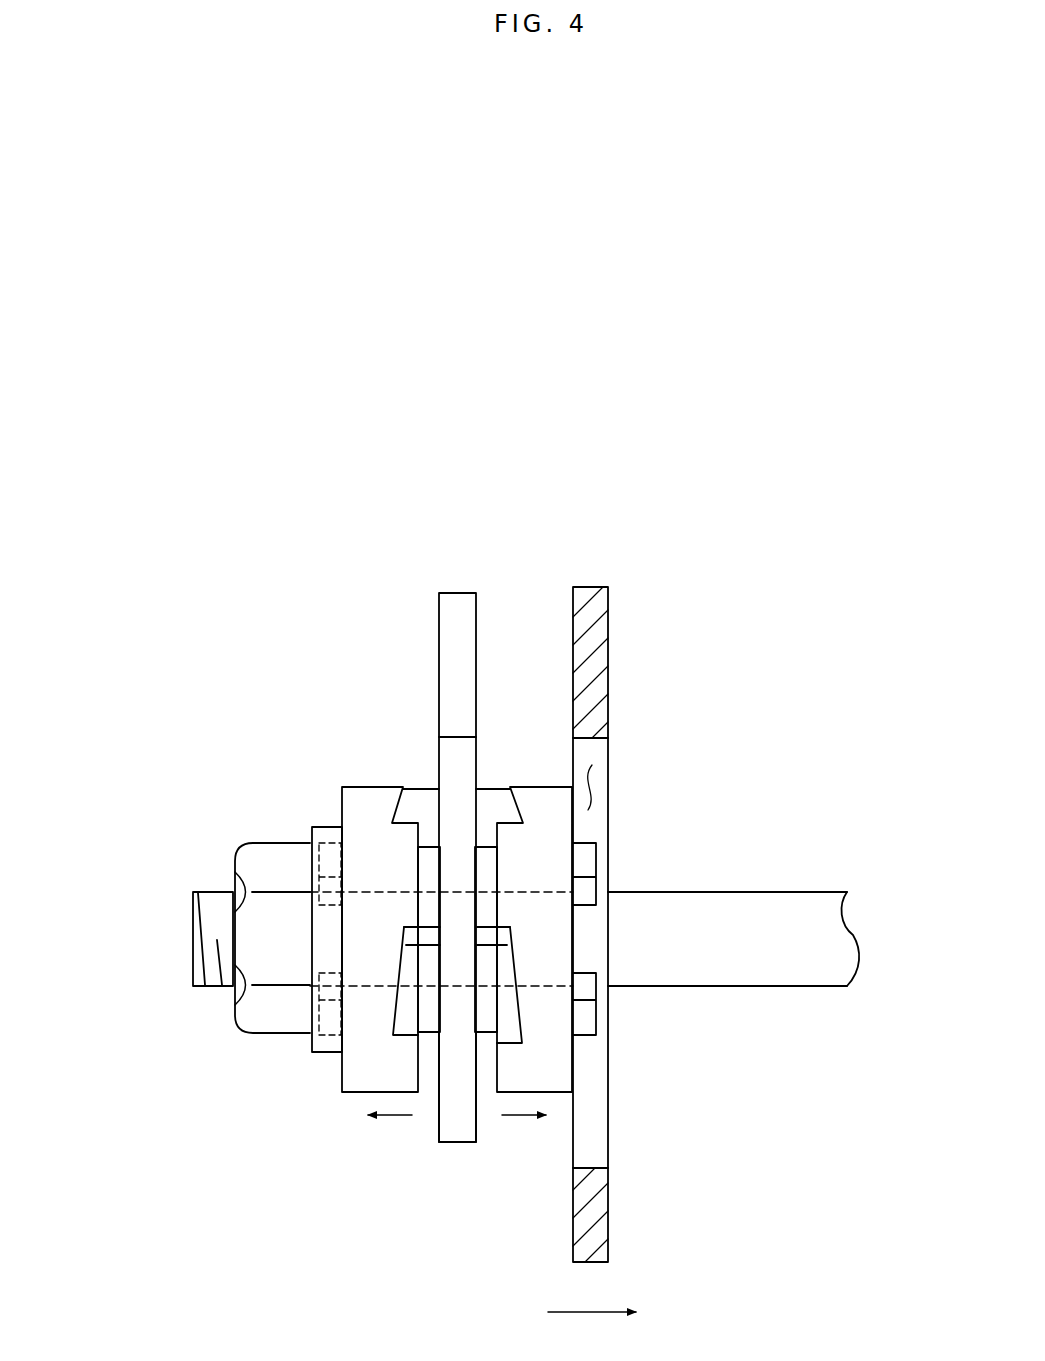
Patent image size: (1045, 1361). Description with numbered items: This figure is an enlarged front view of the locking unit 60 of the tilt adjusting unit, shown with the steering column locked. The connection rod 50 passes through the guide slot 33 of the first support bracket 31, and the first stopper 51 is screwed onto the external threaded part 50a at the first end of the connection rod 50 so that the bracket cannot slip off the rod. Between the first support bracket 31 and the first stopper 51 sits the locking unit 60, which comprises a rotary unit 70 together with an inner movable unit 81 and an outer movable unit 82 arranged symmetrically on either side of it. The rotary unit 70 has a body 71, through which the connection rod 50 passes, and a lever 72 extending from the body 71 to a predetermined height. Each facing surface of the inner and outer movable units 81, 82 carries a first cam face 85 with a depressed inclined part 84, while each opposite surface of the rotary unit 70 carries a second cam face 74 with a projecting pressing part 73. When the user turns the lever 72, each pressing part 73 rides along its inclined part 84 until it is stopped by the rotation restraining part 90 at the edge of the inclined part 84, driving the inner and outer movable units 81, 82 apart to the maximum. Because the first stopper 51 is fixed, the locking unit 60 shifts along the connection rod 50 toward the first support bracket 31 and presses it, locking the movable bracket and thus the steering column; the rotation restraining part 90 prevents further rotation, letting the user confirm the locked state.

The first support bracket 31 is at (598, 642).
The guide slot 33 is at (597, 788).
The connection rod 50 is at (723, 973).
The external threaded part 50a is at (212, 983).
The first stopper 51 is at (292, 1013).
The locking unit 60 is at (327, 1232).
The rotary unit 70 is at (436, 1125).
The body 71 is at (463, 1140).
The lever 72 is at (460, 598).
The pressing part 73 is at (387, 935).
The second cam face 74 is at (475, 1067).
The inner movable unit 81 is at (537, 790).
The outer movable unit 82 is at (375, 793).
The inclined part 84 is at (402, 1028).
The first cam face 85 is at (420, 864).
The rotation restraining part 90 is at (510, 950).